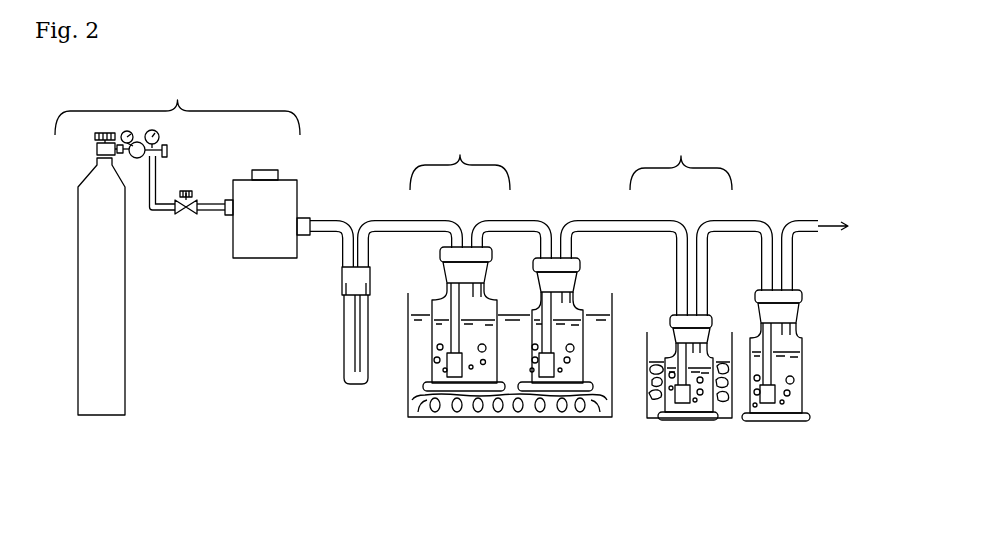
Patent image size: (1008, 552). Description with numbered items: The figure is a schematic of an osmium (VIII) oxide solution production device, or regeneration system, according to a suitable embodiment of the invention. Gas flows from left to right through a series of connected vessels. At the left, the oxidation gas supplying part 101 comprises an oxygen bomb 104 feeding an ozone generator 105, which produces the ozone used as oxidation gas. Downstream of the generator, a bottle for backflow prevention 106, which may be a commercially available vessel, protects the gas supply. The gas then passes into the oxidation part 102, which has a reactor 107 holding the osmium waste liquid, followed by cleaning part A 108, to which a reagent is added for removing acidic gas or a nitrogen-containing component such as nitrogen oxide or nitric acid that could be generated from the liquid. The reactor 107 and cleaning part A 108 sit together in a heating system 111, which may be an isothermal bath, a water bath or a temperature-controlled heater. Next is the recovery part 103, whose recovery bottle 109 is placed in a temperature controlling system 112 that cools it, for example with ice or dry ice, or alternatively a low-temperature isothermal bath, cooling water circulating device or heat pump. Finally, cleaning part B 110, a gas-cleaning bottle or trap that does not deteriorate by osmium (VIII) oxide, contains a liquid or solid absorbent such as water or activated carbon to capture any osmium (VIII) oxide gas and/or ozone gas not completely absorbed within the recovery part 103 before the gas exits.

The oxidation gas supplying part 101 is at (178, 100).
The oxidation part 102 is at (461, 156).
The recovery part 103 is at (681, 156).
The oxygen bomb 104 is at (98, 400).
The ozone generator 105 is at (262, 258).
The bottle for backflow prevention 106 is at (350, 370).
The reactor 107 is at (477, 360).
The cleaning part A 108 is at (571, 368).
The recovery bottle 109 is at (698, 415).
The cleaning part B 110 is at (787, 415).
The heating system 111 is at (410, 400).
The temperature controlling system 112 is at (652, 413).